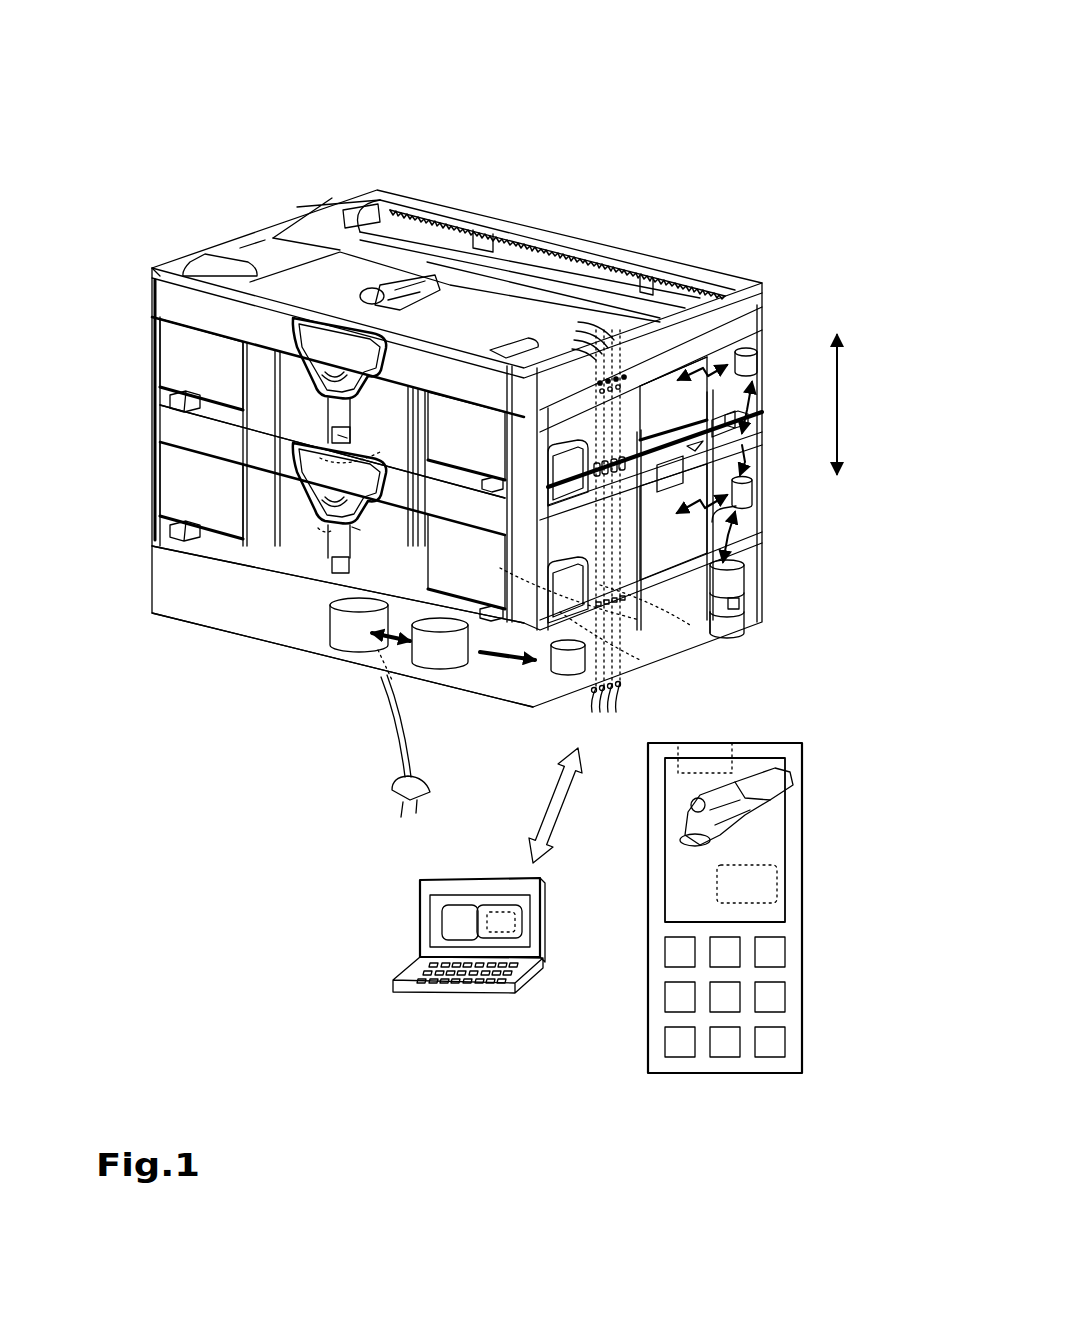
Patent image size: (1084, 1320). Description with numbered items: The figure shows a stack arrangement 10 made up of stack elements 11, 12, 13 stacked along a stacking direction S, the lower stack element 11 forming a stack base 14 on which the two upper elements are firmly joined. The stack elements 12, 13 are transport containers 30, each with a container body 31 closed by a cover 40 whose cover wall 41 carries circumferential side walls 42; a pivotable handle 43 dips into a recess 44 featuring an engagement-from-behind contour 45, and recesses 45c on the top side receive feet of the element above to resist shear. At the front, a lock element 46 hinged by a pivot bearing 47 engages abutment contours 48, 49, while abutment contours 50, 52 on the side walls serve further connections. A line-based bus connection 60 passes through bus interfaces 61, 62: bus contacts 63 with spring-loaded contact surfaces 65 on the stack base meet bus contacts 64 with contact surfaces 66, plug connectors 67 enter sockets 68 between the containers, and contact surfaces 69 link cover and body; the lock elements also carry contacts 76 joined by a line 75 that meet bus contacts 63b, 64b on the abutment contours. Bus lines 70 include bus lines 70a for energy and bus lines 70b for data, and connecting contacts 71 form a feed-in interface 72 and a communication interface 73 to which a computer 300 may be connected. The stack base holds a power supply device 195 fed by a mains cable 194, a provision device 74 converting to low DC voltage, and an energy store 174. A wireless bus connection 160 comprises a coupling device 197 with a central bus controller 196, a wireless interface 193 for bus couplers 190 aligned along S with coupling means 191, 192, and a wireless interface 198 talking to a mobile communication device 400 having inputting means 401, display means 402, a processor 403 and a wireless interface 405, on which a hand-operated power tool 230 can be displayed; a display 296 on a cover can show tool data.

The stack arrangement 10 is at (757, 160).
The stack element 11 is at (152, 567).
The stack element 12 is at (152, 466).
The stack element 13 is at (152, 333).
The stack base 14 is at (203, 630).
The transport container 30 is at (152, 372).
The container body 31 is at (152, 508).
The cover 40 is at (752, 283).
The cover wall 41 is at (182, 278).
The circumferential side walls 42 is at (748, 314).
The handle 43 is at (325, 232).
The recess 44 is at (372, 213).
The engagement-from-behind contour 45 is at (694, 280).
The recesses 45c is at (198, 270).
The lock element 46 is at (320, 356).
The pivot bearing 47 is at (334, 340).
The abutment contours 48 is at (338, 432).
The abutment contours 49 is at (320, 530).
The abutment contours 50 is at (740, 418).
The abutment contours 52 is at (190, 415).
The bus connection 60 is at (625, 668).
The bus interface 61 is at (600, 612).
The bus interface 62 is at (752, 650).
The bus contacts 63 is at (675, 595).
The bus contact 63b is at (358, 530).
The bus contacts 64 is at (660, 500).
The sensor 64b is at (340, 437).
The contact surfaces 65 is at (540, 592).
The contact surfaces 66 is at (537, 580).
The plug connectors 67 is at (660, 392).
The sockets 68 is at (686, 448).
The contact surfaces 69 is at (600, 390).
The bus lines 70 is at (595, 434).
The bus lines 70a is at (596, 535).
The bus lines 70b is at (655, 652).
The connecting contacts 71 is at (604, 707).
The feed-in interface 72 is at (588, 685).
The communication interface 73 is at (620, 686).
The provision device 74 is at (568, 676).
The line 75 is at (382, 452).
The contacts 76 is at (380, 460).
The bus connection 160 is at (750, 523).
The energy store 174 is at (452, 668).
The bus couplers 190 is at (758, 354).
The coupling means 191 is at (752, 435).
The coupling means 192 is at (752, 414).
The wireless interface 193 is at (735, 575).
The mains cable 194 is at (398, 730).
The power supply device 195 is at (328, 633).
The central bus controller 196 is at (748, 596).
The coupling device 197 is at (752, 605).
The wireless interface 198 is at (735, 622).
The hand-operated power tool 230 is at (782, 772).
The display 296 is at (265, 245).
The computer 300 is at (415, 924).
The mobile communication device 400 is at (640, 1078).
The inputting means 401 is at (664, 958).
The display means 402 is at (672, 880).
The processor 403 is at (778, 888).
The wireless interface 405 is at (690, 772).
The stacking direction S is at (840, 385).